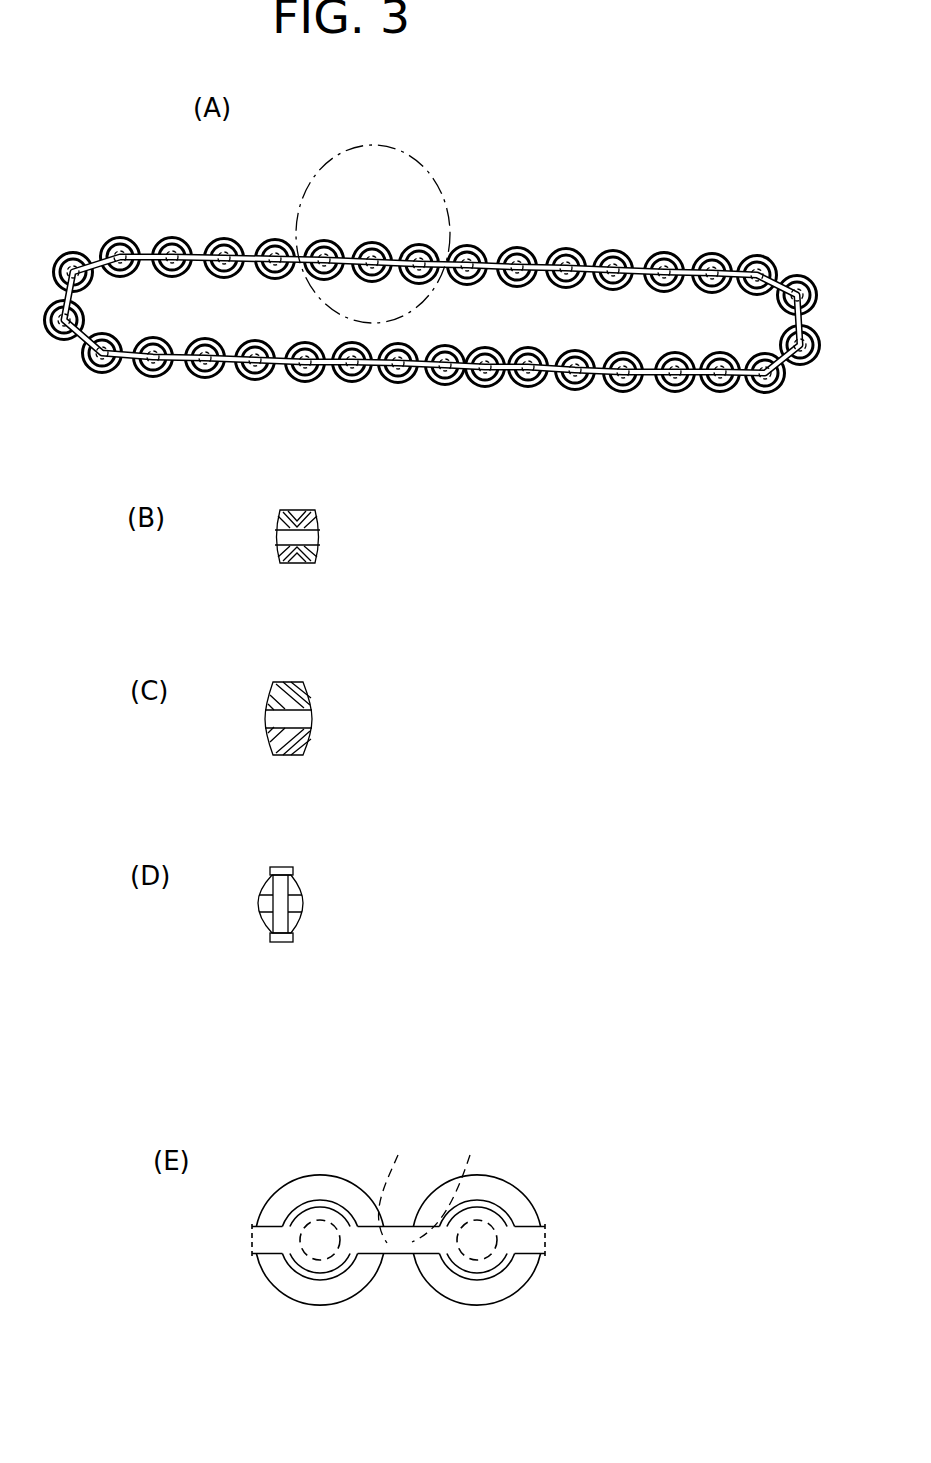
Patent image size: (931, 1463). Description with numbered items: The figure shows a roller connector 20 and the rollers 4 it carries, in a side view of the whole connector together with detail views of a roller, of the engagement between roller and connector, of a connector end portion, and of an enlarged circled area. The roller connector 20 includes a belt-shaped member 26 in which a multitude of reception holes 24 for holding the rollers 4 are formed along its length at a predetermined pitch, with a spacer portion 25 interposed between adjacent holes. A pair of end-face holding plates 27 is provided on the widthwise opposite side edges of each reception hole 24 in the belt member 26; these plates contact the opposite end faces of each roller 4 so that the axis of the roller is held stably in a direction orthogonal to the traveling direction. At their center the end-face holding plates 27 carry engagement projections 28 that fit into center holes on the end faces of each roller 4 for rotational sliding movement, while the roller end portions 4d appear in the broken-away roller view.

The roller connector 20 is at (432, 270).
The spacer portion 25 is at (350, 262).
The belt-shaped member 26 is at (643, 263).
The roller 4 is at (275, 537).
The roller end portion 4d is at (298, 510).
The engagement projection 28 is at (272, 692).
The end-face holding plate 27 is at (300, 680).
The reception hole 24 is at (434, 1175).